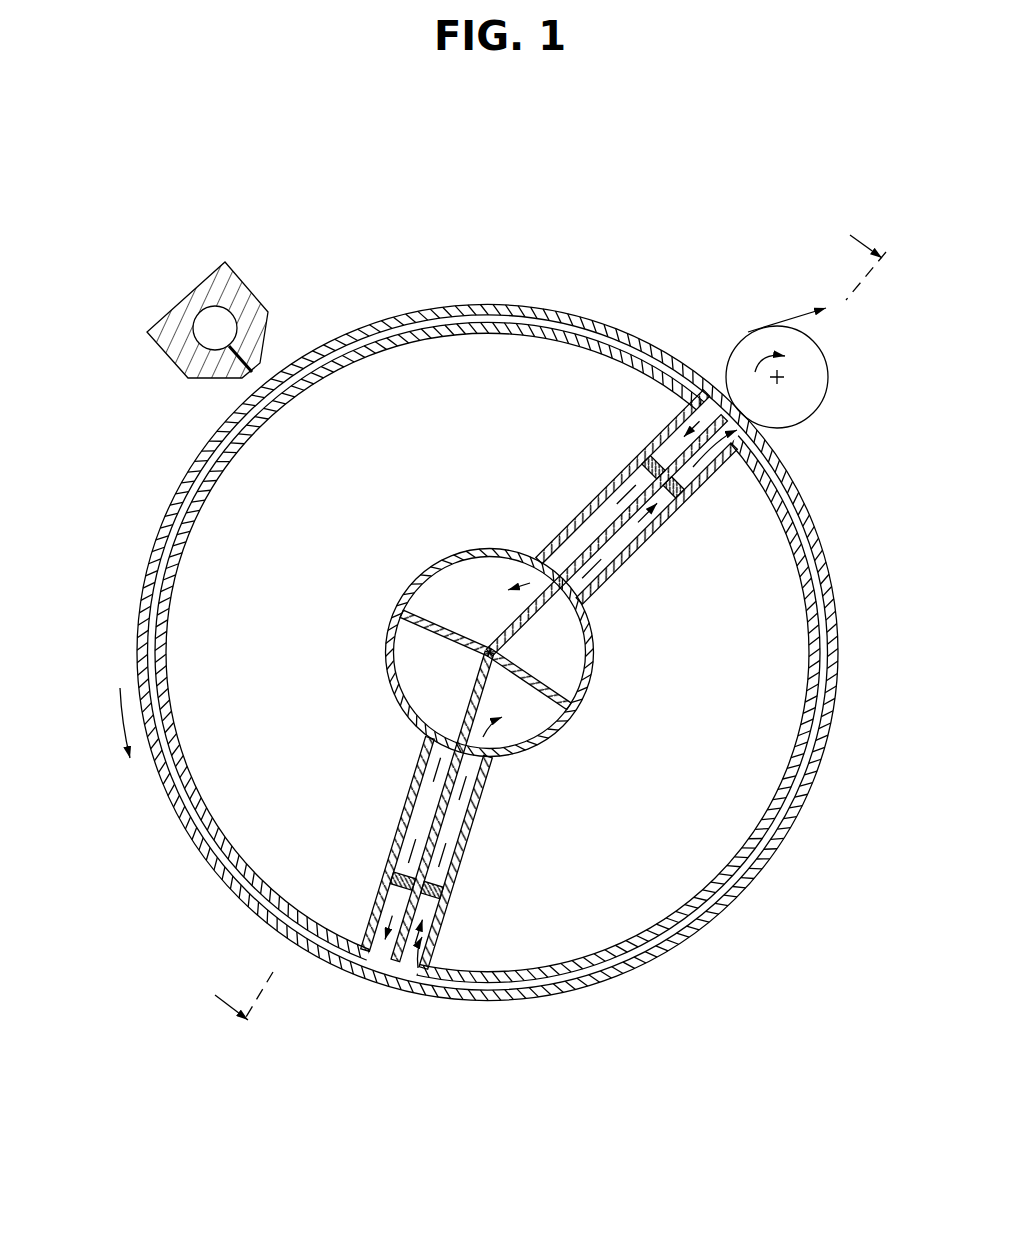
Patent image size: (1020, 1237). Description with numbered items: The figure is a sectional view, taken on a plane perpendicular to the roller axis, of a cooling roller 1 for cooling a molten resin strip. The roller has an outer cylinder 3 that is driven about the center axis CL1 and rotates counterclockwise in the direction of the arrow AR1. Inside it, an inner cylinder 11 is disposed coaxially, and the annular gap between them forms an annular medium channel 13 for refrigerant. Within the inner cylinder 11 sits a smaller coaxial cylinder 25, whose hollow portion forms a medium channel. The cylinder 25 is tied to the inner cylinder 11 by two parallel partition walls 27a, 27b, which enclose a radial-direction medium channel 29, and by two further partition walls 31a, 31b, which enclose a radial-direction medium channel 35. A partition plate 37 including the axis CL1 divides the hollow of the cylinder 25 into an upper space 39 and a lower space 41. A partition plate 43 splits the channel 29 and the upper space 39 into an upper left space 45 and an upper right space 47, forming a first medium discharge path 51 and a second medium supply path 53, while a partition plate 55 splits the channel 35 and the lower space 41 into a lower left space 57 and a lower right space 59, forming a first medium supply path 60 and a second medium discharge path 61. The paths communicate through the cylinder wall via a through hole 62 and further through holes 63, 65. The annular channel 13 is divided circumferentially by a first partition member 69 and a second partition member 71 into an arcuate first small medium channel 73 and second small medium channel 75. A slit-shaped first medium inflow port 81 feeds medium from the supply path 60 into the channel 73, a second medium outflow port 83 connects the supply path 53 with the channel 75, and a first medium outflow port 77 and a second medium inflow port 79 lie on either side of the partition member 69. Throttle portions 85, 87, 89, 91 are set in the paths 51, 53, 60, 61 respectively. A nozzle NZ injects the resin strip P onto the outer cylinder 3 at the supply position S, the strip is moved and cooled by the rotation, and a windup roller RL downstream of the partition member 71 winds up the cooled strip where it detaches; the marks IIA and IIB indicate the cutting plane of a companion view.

The cooling roller 1 is at (612, 185).
The outer cylinder 3 is at (735, 942).
The inner cylinder 11 is at (500, 985).
The annular medium channel 13 is at (728, 913).
The cylinder 25 is at (572, 708).
The partition wall 27a is at (620, 478).
The partition wall 27b is at (650, 520).
The radial-direction medium channel 29 is at (595, 530).
The partition wall 31a is at (470, 830).
The partition wall 31b is at (425, 790).
The radial-direction medium channel 35 is at (408, 810).
The partition plate 37 is at (585, 690).
The upper space 39 is at (592, 642).
The lower space 41 is at (532, 748).
The partition plate 43 is at (598, 605).
The upper left space 45 is at (445, 560).
The upper right space 47 is at (592, 650).
The first medium discharge path 51 is at (664, 420).
The second medium supply path 53 is at (712, 470).
The partition plate 55 is at (488, 790).
The lower left space 57 is at (395, 622).
The lower right space 59 is at (553, 735).
The first medium supply path 60 is at (400, 845).
The second medium discharge path 61 is at (448, 890).
The through hole 62 is at (558, 555).
The through hole 63 is at (585, 614).
The through hole 65 is at (463, 740).
The first partition member 69 is at (722, 400).
The second partition member 71 is at (395, 970).
The first small medium channel 73 is at (158, 546).
The second small medium channel 75 is at (832, 758).
The first medium outflow port 77 is at (703, 392).
The second medium inflow port 79 is at (797, 468).
The first medium inflow port 81 is at (368, 964).
The second medium outflow port 83 is at (420, 985).
The throttle portion 85 is at (648, 460).
The throttle portion 87 is at (680, 483).
The throttle portion 89 is at (395, 882).
The throttle portion 91 is at (440, 905).
The resin strip P is at (781, 318).
The supply position S is at (190, 452).
The nozzle NZ is at (162, 362).
The windup roller RL is at (815, 405).
The center axis CL1 is at (590, 665).
The arrow AR1 is at (94, 741).
The IIA arrow IIA is at (843, 252).
The IIB arrow IIB is at (219, 994).